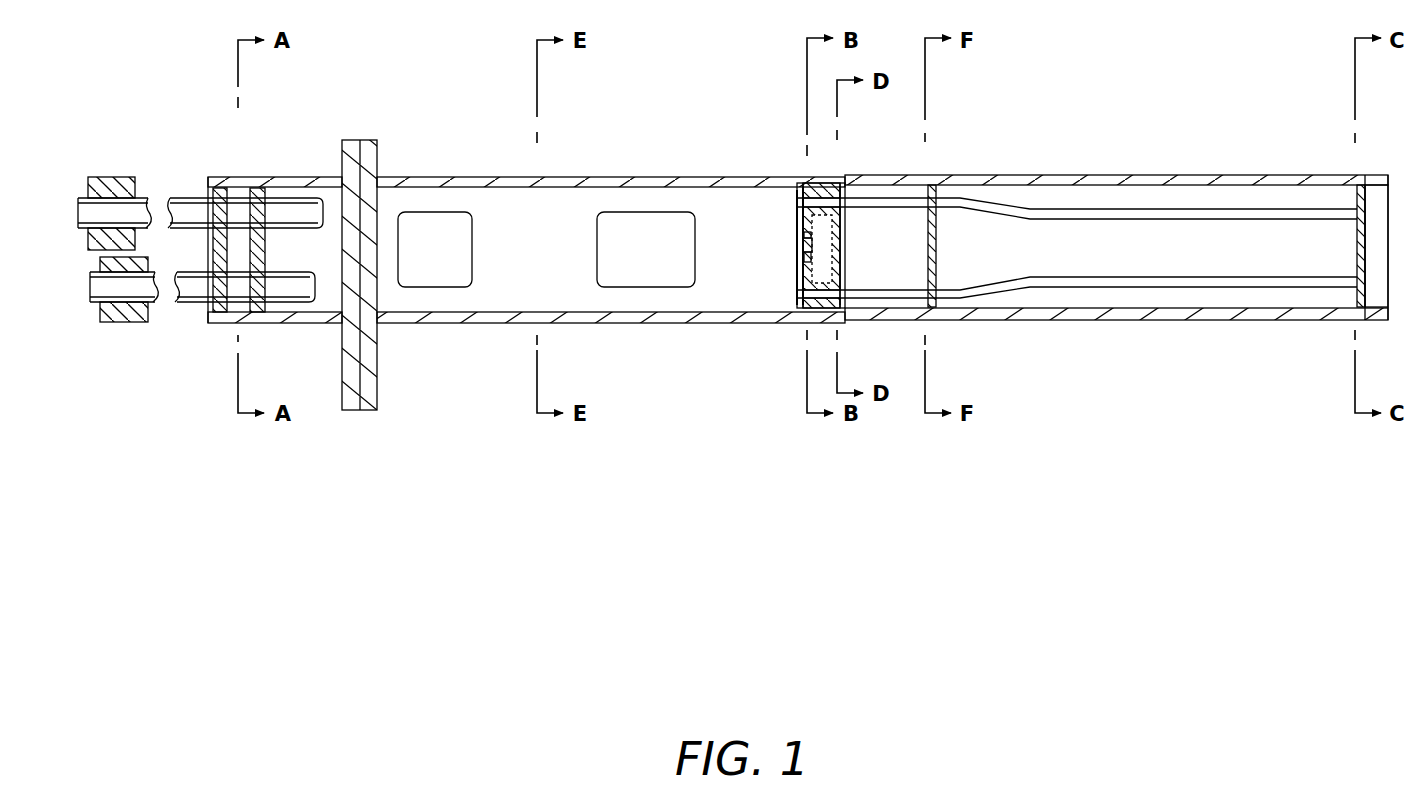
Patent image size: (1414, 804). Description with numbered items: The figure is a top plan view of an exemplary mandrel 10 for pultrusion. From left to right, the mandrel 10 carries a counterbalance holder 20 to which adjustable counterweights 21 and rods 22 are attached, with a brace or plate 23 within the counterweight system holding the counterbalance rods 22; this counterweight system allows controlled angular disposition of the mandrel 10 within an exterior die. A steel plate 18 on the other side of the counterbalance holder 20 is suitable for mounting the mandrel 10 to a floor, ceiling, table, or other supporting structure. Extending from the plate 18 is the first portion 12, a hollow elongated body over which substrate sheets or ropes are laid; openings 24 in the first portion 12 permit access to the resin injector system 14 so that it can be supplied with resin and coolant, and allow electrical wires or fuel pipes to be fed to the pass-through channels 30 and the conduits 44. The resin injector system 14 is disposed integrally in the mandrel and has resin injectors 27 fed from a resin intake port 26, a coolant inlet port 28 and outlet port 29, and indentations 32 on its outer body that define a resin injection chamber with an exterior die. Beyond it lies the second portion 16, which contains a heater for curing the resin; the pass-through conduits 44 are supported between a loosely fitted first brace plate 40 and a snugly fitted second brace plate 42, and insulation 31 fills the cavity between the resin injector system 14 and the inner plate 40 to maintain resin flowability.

The mandrel 10 is at (1398, 583).
The first portion 12 is at (785, 443).
The resin injector system 14 is at (793, 443).
The second portion 16 is at (1398, 443).
The steel plate 18 is at (377, 443).
The counterbalance holder 20 is at (210, 250).
The counterweights 21 is at (112, 177).
The rods 22 is at (182, 202).
The brace or plate 23 is at (236, 237).
The openings 24 is at (423, 284).
The resin intake port 26 is at (796, 247).
The resin injectors 27 is at (805, 183).
The inlet port 28 is at (796, 234).
The outlet port 29 is at (796, 260).
The pass-through channels 30 is at (794, 184).
The insulation 31 is at (896, 218).
The indentations 32 is at (829, 183).
The first brace plate 40 is at (937, 258).
The second brace plate 42 is at (1357, 235).
The pass-through conduits 44 is at (1121, 221).